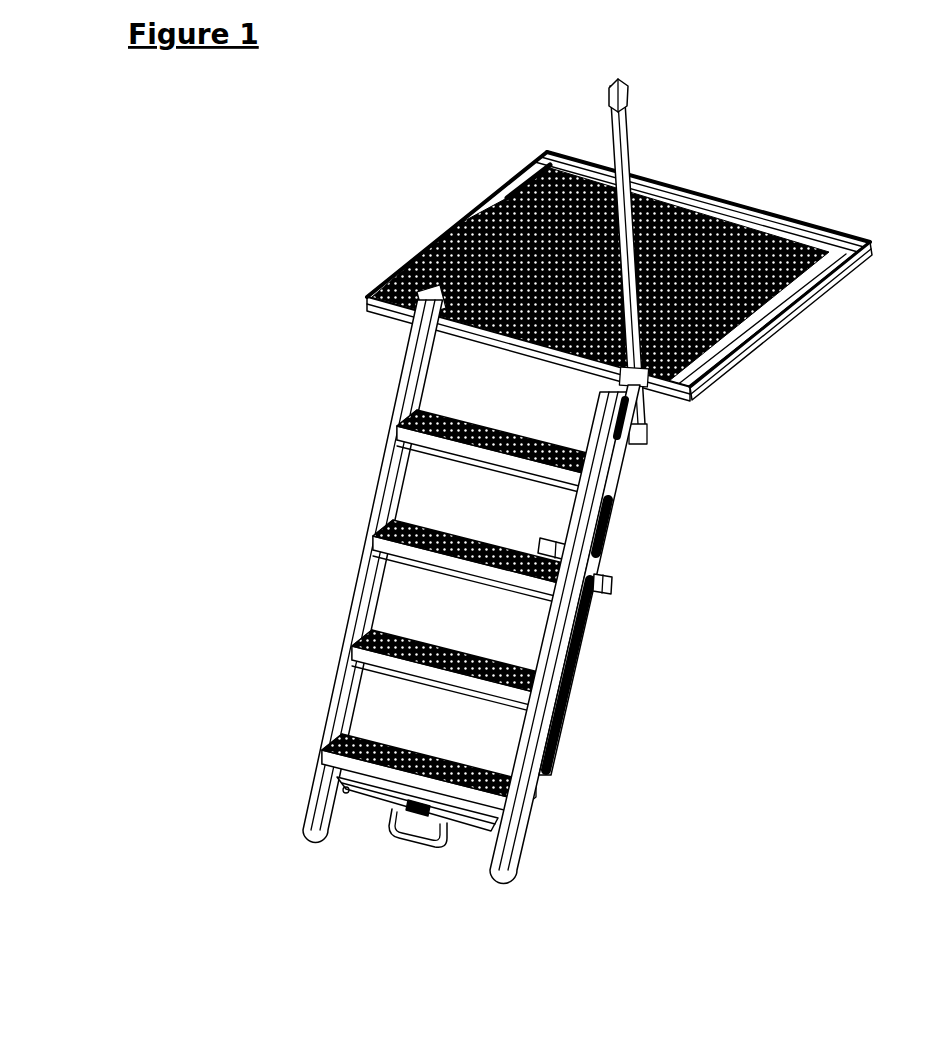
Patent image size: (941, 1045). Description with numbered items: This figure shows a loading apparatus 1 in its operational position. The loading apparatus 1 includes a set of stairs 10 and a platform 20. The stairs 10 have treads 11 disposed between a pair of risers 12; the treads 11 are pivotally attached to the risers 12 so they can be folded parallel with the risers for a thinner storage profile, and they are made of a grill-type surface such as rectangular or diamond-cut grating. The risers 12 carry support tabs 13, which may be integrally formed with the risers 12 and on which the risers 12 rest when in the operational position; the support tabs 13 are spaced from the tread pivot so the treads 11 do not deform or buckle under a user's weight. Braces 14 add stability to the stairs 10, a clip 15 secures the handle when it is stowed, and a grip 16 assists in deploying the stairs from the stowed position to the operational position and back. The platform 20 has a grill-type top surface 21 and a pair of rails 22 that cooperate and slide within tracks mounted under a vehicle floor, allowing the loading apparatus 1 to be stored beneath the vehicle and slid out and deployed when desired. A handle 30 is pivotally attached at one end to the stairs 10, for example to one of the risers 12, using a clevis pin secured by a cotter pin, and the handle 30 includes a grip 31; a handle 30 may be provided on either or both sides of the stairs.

The loading apparatus 1 is at (800, 168).
The stairs 10 is at (317, 492).
The treads 11 is at (541, 543).
The risers 12 is at (548, 630).
The support tabs 13 is at (540, 691).
The braces 14 is at (351, 795).
The clip 15 is at (612, 584).
The grip 16 is at (427, 840).
The platform 20 is at (768, 331).
The grill-type top surface 21 is at (722, 357).
The rails 22 is at (393, 263).
The handle 30 is at (610, 140).
The grip 31 is at (628, 96).